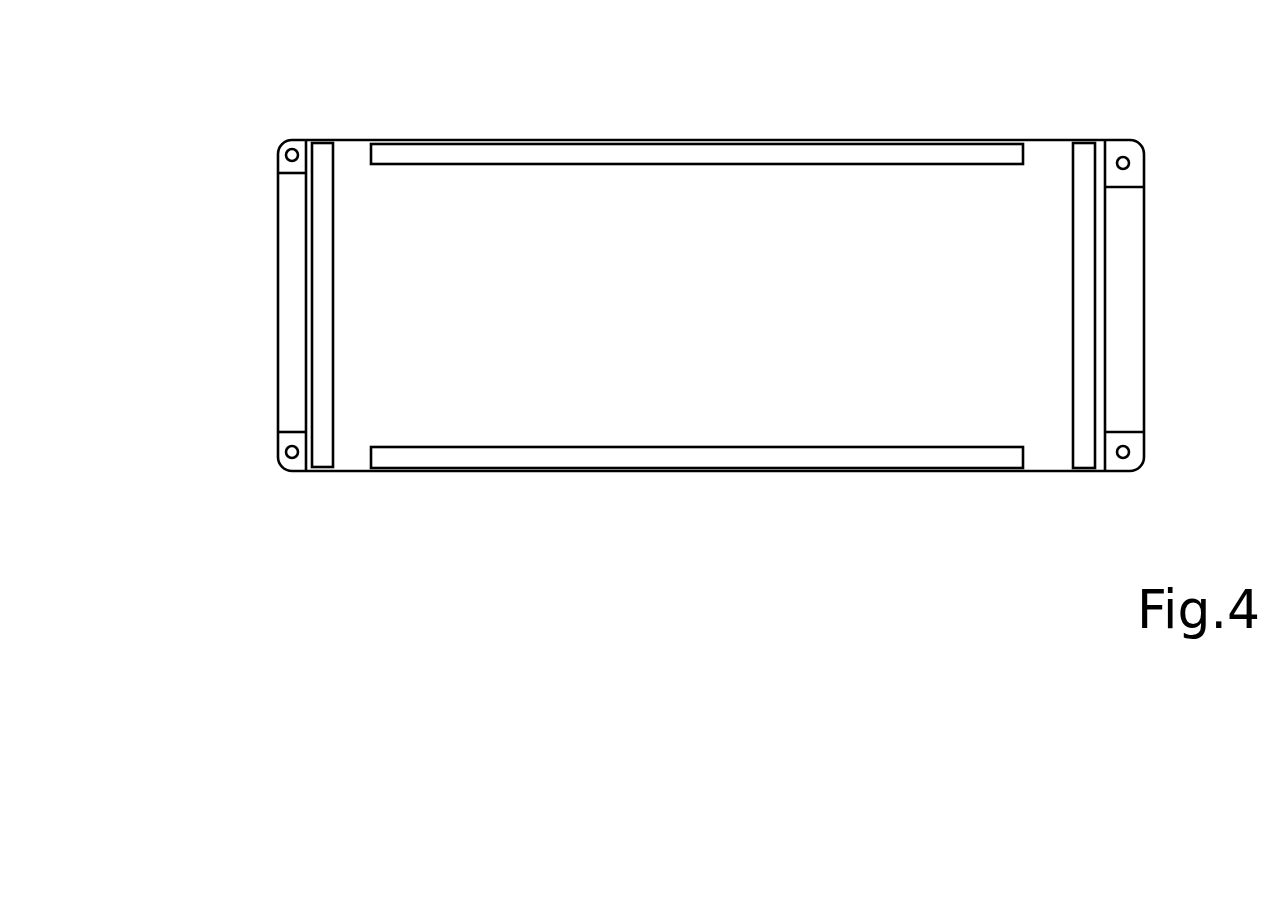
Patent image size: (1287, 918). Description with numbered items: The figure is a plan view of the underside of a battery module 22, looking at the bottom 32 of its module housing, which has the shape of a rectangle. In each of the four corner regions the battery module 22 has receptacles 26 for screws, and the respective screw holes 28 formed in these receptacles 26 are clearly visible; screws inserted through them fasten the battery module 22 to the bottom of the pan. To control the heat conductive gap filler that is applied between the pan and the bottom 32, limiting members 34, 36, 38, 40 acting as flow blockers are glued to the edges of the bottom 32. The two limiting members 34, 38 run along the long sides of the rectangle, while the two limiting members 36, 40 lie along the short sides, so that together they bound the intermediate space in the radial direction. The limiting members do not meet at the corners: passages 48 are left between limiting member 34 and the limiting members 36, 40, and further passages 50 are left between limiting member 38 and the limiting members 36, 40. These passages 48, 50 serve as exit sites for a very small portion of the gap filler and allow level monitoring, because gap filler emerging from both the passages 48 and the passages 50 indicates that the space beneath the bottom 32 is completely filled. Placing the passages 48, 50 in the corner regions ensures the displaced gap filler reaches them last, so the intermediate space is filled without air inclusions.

The battery module 22 is at (436, 104).
The receptacles 26 is at (283, 166).
The screw holes 28 is at (290, 154).
The bottom 32 is at (646, 290).
The limiting member 34 is at (822, 158).
The limiting member 36 is at (324, 280).
The limiting member 38 is at (645, 458).
The limiting member 40 is at (1077, 350).
The passages 48 is at (356, 148).
The passages 50 is at (353, 466).